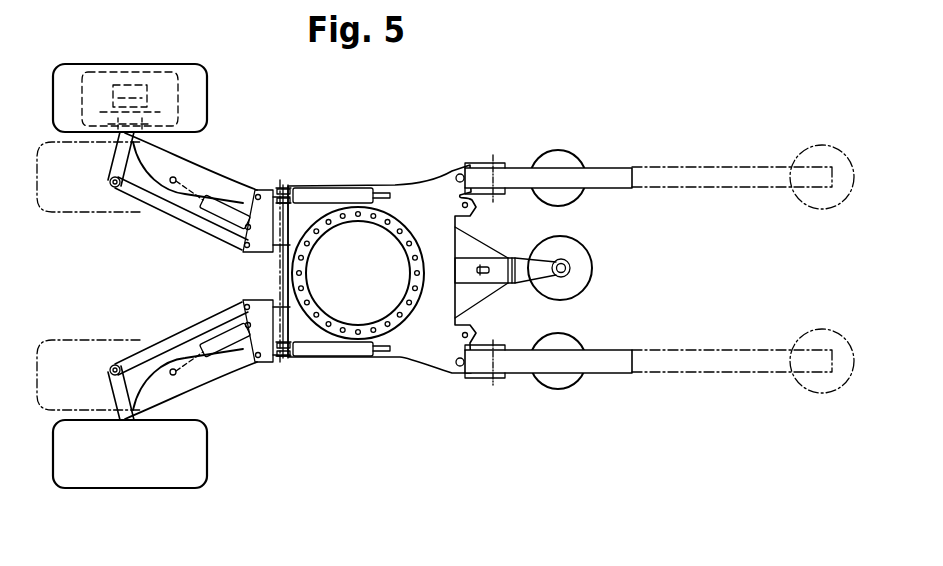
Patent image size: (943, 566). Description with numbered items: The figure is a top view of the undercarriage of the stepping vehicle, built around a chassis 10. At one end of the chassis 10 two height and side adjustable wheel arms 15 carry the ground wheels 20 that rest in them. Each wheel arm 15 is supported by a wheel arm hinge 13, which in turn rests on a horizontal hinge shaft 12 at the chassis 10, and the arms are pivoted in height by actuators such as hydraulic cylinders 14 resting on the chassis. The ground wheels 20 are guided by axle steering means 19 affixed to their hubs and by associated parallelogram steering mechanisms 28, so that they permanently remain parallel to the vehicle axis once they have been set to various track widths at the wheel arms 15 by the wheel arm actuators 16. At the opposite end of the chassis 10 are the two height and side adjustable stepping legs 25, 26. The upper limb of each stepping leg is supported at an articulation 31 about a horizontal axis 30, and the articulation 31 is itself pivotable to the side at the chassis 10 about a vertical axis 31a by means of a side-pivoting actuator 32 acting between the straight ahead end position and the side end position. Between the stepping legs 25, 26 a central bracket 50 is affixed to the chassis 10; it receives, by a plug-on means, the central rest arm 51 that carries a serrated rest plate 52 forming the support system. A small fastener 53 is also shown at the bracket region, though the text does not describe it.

The chassis 10 is at (402, 333).
The horizontal hinge shaft 12 is at (283, 290).
The wheel arm hinge 13 is at (245, 297).
The hydraulic cylinder 14 is at (330, 348).
The wheel arm 15 is at (238, 358).
The wheel arm actuator 16 is at (215, 340).
The axle steering means 19 is at (145, 405).
The ground wheel 20 is at (167, 472).
The stepping leg 25 is at (607, 162).
The stepping leg 26 is at (604, 380).
The parallelogram steering mechanism 28 is at (160, 345).
The horizontal axis 30 is at (498, 384).
The articulation 31 is at (470, 170).
The vertical axis 31a is at (455, 177).
The side-pivoting actuator 32 is at (448, 336).
The central bracket 50 is at (476, 250).
The rest arm 51 is at (522, 259).
The rest plate 52 is at (586, 270).
The fastener 53 is at (486, 276).